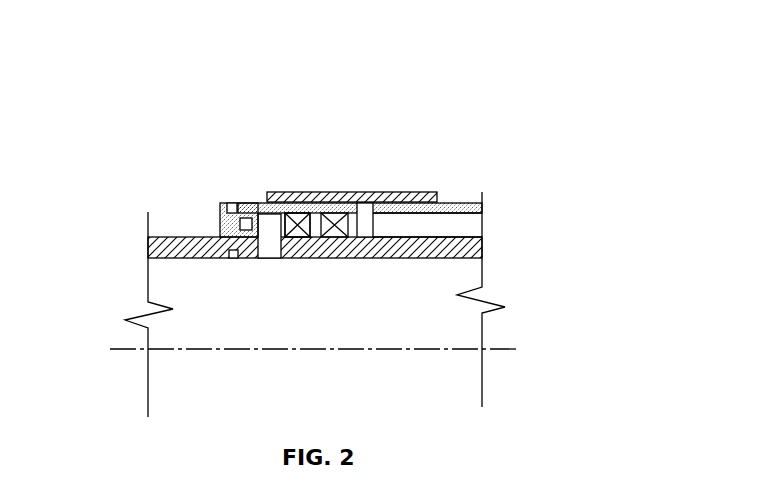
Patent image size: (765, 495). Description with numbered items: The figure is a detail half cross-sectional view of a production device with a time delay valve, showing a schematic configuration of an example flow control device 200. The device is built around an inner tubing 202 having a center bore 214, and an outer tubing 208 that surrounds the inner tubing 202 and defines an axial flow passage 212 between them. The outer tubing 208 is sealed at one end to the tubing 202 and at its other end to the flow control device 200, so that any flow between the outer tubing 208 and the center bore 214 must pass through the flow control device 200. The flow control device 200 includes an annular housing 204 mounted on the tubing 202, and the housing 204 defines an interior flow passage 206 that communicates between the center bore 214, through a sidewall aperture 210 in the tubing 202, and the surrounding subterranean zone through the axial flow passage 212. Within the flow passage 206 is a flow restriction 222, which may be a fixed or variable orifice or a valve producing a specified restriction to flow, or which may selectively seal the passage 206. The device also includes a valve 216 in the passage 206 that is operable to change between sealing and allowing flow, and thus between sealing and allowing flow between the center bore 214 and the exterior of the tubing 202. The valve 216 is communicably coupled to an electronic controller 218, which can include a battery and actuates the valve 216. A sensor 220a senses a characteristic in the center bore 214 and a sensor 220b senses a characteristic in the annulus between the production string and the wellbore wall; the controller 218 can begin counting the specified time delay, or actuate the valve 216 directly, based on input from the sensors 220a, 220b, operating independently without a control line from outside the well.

The flow control device 200 is at (211, 140).
The inner tubing 202 is at (185, 237).
The annular housing 204 is at (311, 213).
The interior flow passage 206 is at (283, 214).
The outer tubing 208 is at (458, 202).
The sidewall aperture 210 is at (273, 250).
The axial flow passage 212 is at (465, 225).
The center bore 214 is at (307, 343).
The valve 216 is at (358, 212).
The electronic controller 218 is at (244, 217).
The sensor 220a is at (234, 258).
The sensor 220b is at (231, 203).
The flow restriction 222 is at (301, 238).